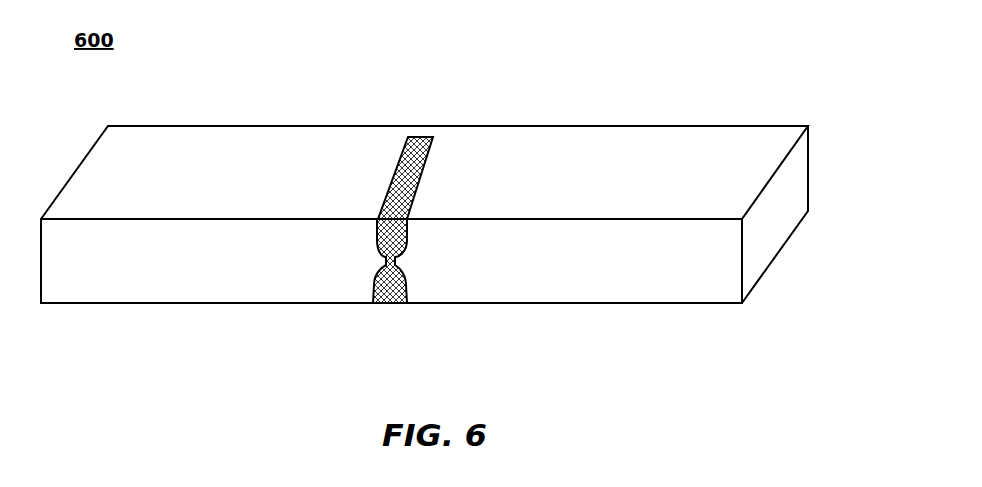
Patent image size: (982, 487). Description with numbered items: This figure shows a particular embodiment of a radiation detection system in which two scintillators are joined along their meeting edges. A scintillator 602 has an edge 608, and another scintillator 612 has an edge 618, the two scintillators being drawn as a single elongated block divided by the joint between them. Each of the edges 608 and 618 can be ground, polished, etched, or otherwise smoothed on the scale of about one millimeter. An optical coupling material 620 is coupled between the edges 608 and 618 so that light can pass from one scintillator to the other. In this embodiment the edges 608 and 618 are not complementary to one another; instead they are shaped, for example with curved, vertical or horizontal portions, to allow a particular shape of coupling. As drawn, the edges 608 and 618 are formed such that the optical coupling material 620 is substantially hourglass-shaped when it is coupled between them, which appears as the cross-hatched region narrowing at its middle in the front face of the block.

The scintillator 602 is at (263, 107).
The another scintillator 612 is at (578, 110).
The edge 608 is at (375, 242).
The edge 618 is at (407, 278).
The optical coupling material 620 is at (390, 304).